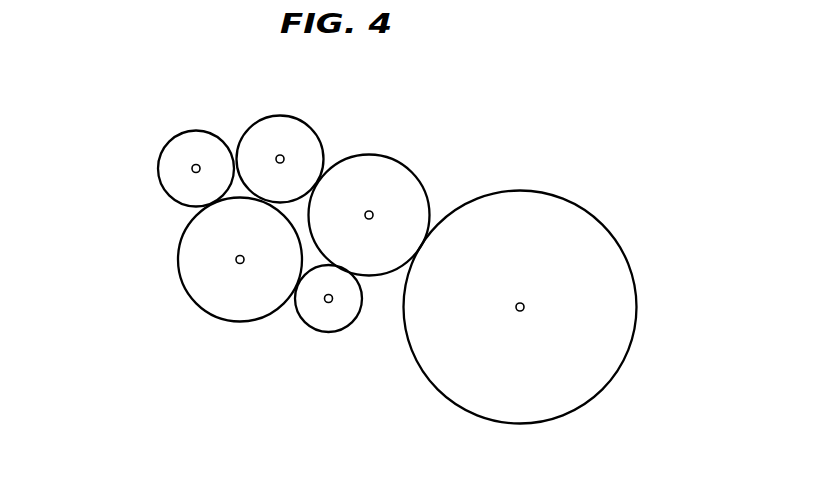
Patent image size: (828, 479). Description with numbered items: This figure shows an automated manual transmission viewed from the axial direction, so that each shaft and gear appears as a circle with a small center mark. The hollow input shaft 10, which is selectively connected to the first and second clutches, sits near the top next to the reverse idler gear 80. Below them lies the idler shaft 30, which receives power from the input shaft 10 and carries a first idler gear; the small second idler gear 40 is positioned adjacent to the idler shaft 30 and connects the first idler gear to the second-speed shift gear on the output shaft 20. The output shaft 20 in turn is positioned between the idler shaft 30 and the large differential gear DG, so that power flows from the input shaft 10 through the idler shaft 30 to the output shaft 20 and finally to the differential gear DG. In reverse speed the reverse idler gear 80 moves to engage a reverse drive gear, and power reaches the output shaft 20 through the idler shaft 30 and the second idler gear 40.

The input shaft 10 is at (310, 123).
The output shaft 20 is at (418, 175).
The idler shaft 30 is at (187, 295).
The second idler gear 40 is at (305, 330).
The reverse idler gear 80 is at (160, 187).
The differential gear DG is at (595, 210).